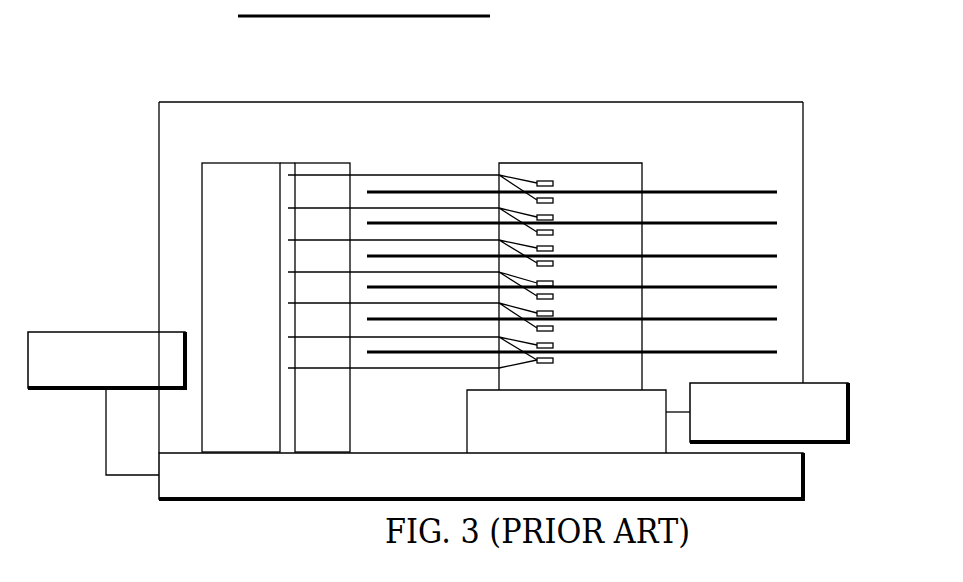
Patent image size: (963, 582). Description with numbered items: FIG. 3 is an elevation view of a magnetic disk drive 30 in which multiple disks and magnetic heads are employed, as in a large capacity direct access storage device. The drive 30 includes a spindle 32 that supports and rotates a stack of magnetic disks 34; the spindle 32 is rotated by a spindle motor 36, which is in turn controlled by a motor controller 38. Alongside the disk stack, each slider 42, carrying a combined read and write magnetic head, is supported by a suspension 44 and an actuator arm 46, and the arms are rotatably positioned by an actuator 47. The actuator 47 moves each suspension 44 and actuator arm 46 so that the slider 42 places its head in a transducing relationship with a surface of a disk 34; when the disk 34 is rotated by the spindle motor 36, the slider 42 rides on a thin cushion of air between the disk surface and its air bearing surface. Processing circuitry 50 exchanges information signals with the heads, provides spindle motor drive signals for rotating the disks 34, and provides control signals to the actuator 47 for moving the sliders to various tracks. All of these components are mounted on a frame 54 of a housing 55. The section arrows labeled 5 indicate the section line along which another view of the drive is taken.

The section line 5- 5 is at (260, 28).
The magnetic disk drive 30 is at (702, 157).
The spindle 32 is at (620, 163).
The magnetic disk 34 is at (777, 194).
The spindle motor 36 is at (566, 421).
The motor controller 38 is at (843, 443).
The slider 42 is at (546, 215).
The suspension 44 is at (524, 210).
The actuator arm 46 is at (452, 208).
The actuator 47 is at (235, 163).
The processing circuitry 50 is at (88, 332).
The frame 54 is at (274, 500).
The housing 55 is at (652, 102).